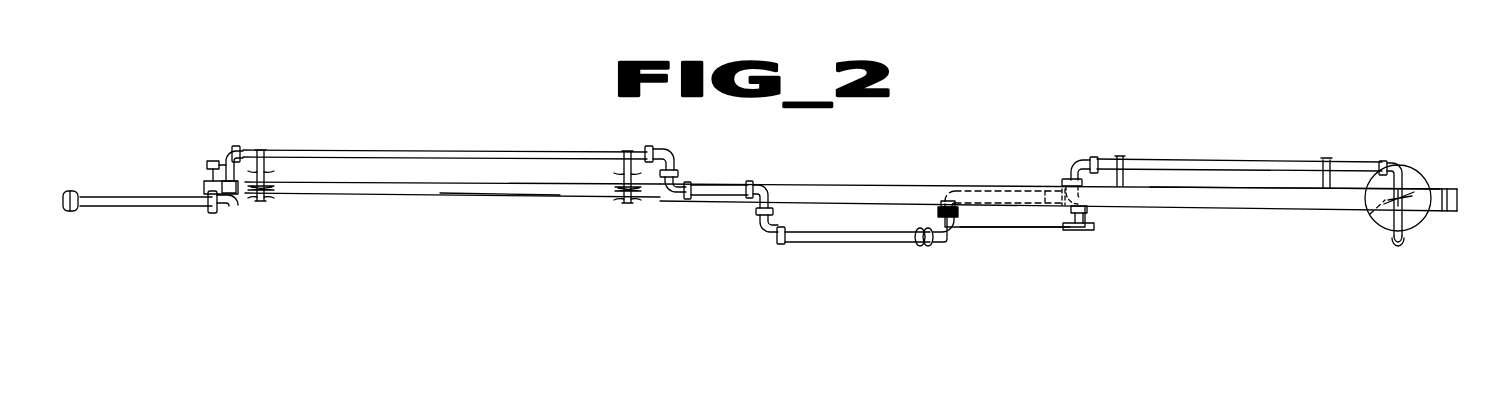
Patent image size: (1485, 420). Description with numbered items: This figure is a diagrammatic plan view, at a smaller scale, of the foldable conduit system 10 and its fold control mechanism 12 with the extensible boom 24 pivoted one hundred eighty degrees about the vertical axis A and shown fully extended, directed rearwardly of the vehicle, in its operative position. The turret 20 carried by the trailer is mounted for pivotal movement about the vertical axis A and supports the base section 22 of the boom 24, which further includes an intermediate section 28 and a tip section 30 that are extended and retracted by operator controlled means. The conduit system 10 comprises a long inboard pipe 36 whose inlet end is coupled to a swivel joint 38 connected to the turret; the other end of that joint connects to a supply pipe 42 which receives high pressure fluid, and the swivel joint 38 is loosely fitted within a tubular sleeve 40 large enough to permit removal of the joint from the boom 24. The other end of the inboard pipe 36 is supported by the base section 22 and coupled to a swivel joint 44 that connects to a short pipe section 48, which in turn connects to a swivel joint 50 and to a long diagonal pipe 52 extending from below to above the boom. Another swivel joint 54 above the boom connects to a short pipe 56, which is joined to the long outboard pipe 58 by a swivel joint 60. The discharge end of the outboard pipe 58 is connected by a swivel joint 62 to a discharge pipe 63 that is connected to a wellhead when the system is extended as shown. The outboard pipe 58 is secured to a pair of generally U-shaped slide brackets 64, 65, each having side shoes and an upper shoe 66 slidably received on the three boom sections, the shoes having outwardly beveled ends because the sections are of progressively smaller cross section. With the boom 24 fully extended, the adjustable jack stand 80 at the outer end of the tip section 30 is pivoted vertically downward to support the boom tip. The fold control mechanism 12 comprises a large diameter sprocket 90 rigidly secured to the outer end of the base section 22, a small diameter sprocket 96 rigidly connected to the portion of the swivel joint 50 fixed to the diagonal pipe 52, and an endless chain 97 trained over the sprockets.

The foldable conduit system 10 is at (432, 139).
The fold control mechanism 12 is at (1044, 235).
The turret 20 is at (1410, 229).
The base section 22 is at (1228, 210).
The extensible boom 24 is at (418, 204).
The intermediate section 28 is at (843, 184).
The tip section 30 is at (483, 196).
The inboard pipe 36 is at (1203, 160).
The swivel joint 38 is at (1406, 190).
The tubular sleeve 40 is at (1408, 193).
The supply pipe 42 is at (1394, 240).
The swivel joint 44 is at (1075, 178).
The short pipe section 48 is at (1007, 190).
The swivel joint 50 is at (943, 211).
The diagonal pipe 52 is at (828, 242).
The swivel joint 54 is at (755, 211).
The short pipe 56 is at (735, 184).
The outboard pipe 58 is at (494, 151).
The swivel joint 60 is at (672, 168).
The swivel joint 62 is at (228, 206).
The discharge pipe 63 is at (137, 207).
The slide bracket 64 is at (625, 206).
The slide bracket 65 is at (264, 160).
The shoe 66 is at (270, 191).
The adjustable jack stand 80 is at (206, 168).
The large diameter sprocket 90 is at (1094, 231).
The small diameter sprocket 96 is at (955, 240).
The endless chain 97 is at (1008, 228).
The vertical axis A is at (1370, 214).